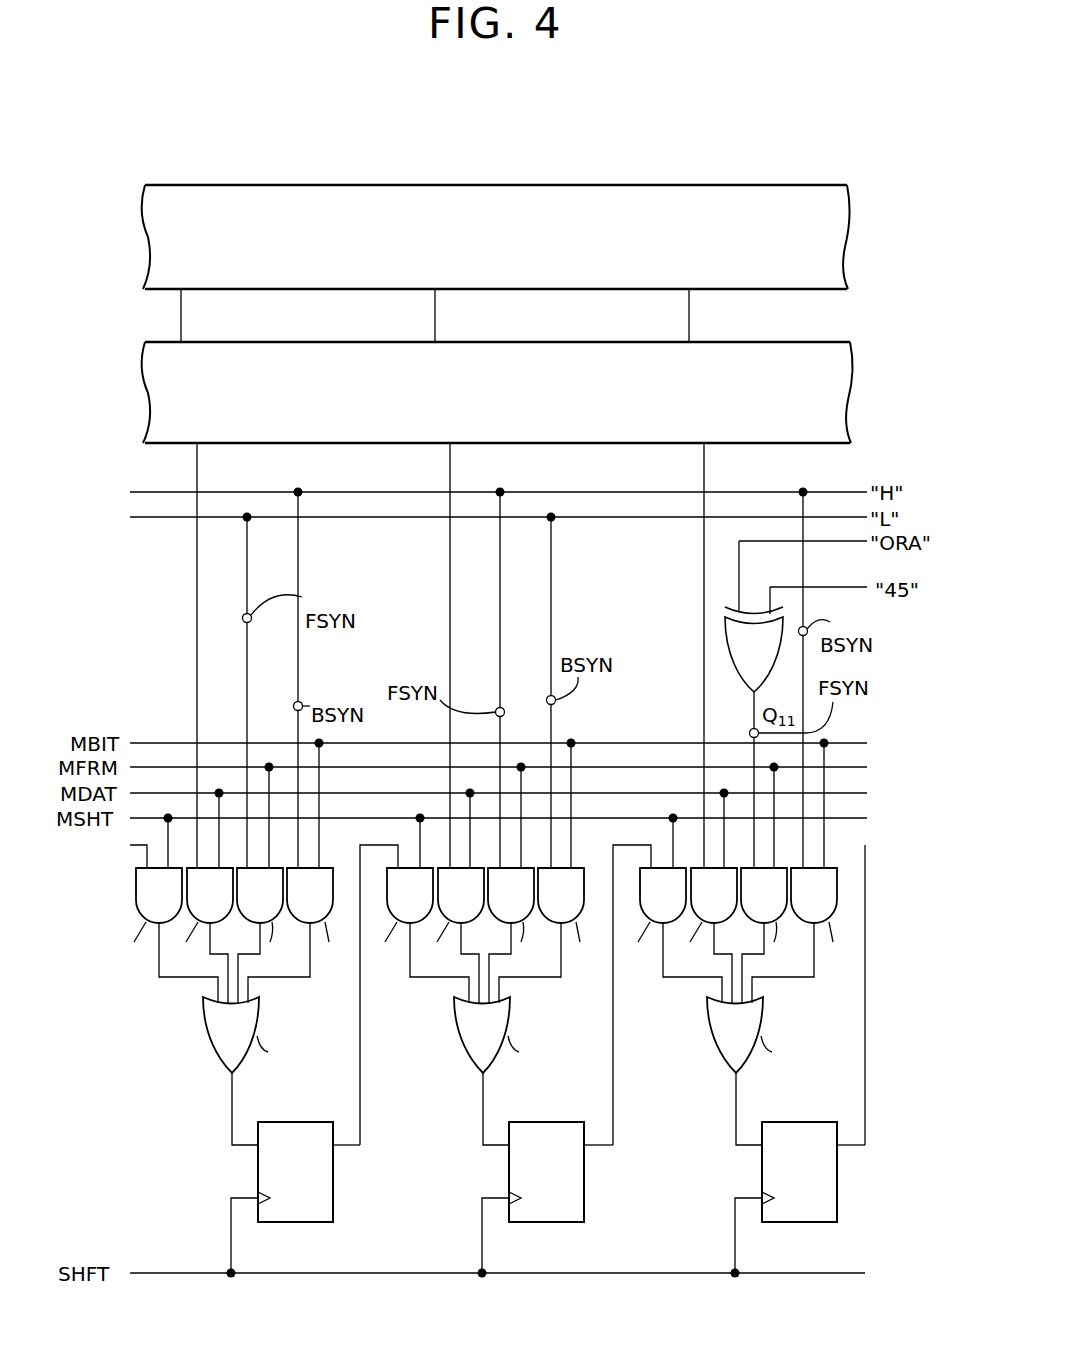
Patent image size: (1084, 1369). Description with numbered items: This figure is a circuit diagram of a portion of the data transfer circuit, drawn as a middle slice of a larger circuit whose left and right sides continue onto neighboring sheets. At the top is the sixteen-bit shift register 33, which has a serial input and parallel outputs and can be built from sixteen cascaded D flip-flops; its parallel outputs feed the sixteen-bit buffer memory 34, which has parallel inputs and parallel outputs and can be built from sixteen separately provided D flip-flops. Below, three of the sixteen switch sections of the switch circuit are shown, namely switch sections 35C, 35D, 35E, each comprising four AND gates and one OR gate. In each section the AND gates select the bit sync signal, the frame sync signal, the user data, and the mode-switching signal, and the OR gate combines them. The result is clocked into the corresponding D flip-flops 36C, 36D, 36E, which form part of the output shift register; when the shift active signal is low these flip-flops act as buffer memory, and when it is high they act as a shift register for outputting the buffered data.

The shift register 33 is at (578, 292).
The buffer memory 34 is at (590, 445).
The switch section 35C is at (184, 1046).
The switch section 35D is at (435, 1046).
The switch section 35E is at (688, 1046).
The D flip-flop 36C is at (330, 1223).
The D flip-flop 36D is at (581, 1223).
The D flip-flop 36E is at (834, 1223).